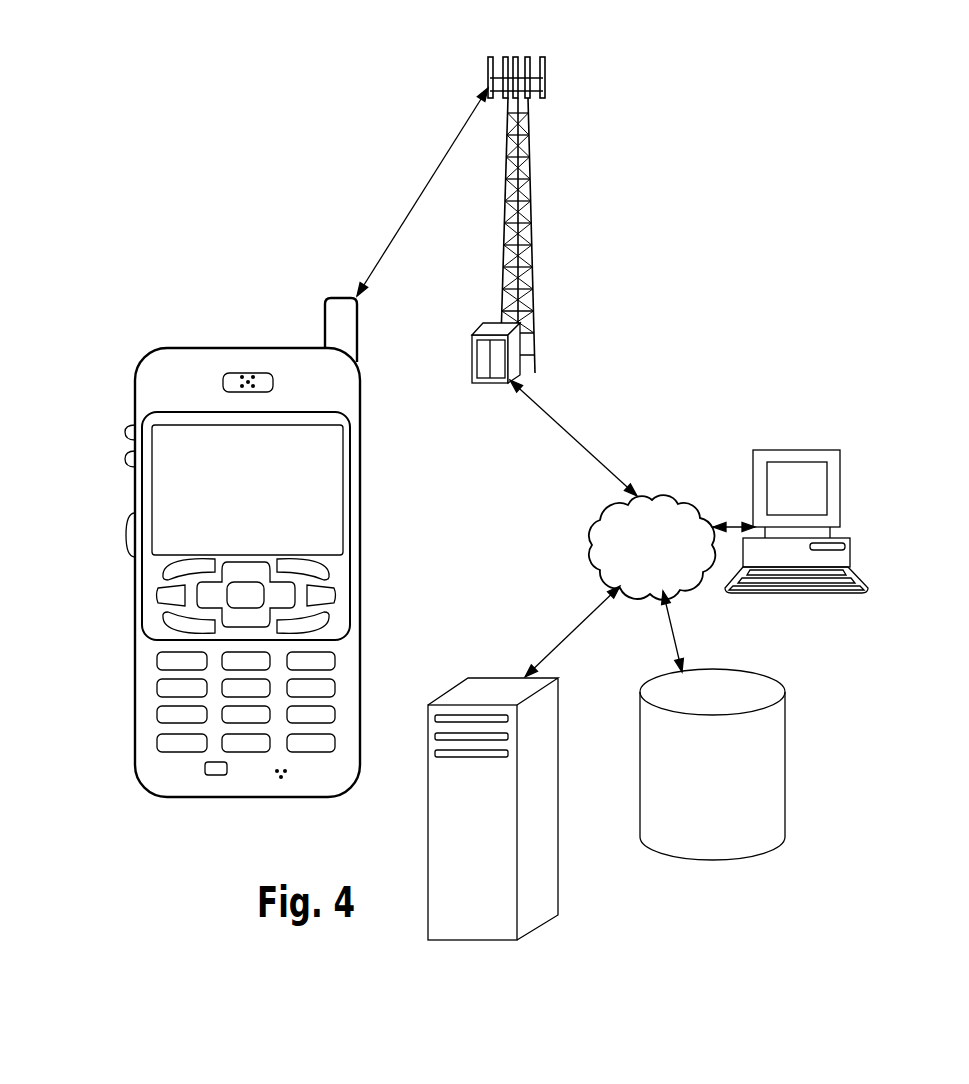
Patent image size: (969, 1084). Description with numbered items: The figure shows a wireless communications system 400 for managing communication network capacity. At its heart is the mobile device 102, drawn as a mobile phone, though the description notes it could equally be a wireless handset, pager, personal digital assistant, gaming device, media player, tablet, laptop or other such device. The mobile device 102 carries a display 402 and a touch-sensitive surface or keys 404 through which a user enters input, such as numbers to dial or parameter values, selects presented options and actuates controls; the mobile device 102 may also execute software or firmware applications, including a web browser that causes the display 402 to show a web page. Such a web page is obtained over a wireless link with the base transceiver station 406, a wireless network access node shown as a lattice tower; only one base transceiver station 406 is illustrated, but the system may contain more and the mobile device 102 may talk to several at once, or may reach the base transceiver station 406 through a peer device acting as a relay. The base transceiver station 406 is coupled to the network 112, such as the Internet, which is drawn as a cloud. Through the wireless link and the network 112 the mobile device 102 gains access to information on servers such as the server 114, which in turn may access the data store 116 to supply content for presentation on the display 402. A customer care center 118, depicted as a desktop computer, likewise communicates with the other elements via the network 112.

The wireless communications system 400 is at (350, 83).
The mobile device 102 is at (162, 797).
The display 402 is at (340, 468).
The keys 404 is at (130, 566).
The base transceiver station 406 is at (500, 235).
The network 112 is at (604, 576).
The server 114 is at (433, 778).
The data store 116 is at (640, 758).
The customer care center 118 is at (813, 440).